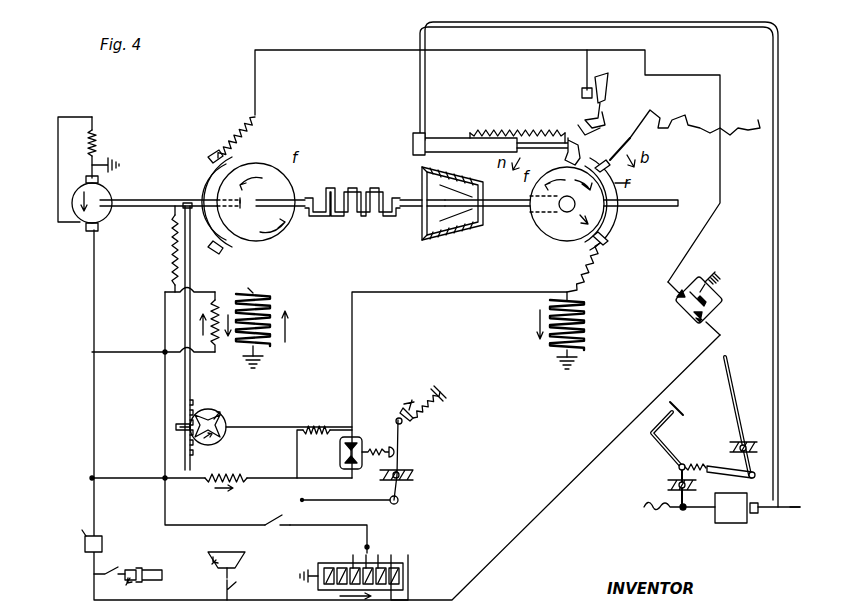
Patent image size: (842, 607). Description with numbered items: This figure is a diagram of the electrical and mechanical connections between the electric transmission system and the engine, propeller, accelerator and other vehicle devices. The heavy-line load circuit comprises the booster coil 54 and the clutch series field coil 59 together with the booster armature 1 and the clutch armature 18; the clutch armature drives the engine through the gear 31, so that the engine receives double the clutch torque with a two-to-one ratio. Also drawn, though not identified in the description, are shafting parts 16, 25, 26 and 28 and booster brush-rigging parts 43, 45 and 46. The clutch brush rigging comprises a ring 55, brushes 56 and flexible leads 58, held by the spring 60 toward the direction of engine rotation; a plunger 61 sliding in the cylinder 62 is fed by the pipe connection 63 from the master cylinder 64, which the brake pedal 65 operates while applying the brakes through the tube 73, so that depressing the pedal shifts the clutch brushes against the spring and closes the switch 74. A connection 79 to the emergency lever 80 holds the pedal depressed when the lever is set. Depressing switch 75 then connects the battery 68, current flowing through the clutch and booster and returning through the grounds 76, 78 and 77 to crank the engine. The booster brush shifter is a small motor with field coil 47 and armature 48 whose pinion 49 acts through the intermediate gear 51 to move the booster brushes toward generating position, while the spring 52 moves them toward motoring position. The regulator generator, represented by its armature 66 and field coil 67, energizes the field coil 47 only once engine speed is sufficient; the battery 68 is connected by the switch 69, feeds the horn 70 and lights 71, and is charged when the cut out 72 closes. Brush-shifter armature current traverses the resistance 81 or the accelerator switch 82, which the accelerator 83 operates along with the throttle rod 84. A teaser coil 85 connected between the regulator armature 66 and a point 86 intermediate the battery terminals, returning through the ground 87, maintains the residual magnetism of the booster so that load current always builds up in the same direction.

The booster armature 1 is at (275, 228).
The crankshaft 16 is at (353, 190).
The clutch armature 18 is at (555, 236).
The shaft 25 is at (420, 220).
The shaft 26 is at (483, 215).
The output shaft 28 is at (660, 200).
The gear 31 is at (442, 236).
The commutator segment 43 is at (207, 178).
The brushes 45 is at (230, 175).
The resistance 46 is at (234, 133).
The field coil 47 is at (207, 484).
The armature 48 is at (222, 440).
The pinion 49 is at (212, 412).
The intermediate gear 51 is at (184, 385).
The spring 52 is at (172, 245).
The coil 54 is at (275, 304).
The ring 55 is at (616, 226).
The brushes 56 is at (594, 242).
The flexible leads 58 is at (603, 268).
The series field coil 59 is at (586, 325).
The spring 60 is at (498, 128).
The piston or plunger 61 is at (540, 138).
The cylinder 62 is at (453, 137).
The pipe connection 63 is at (705, 25).
The master cylinder 64 is at (742, 520).
The pedal 65 is at (660, 448).
The armature 66 is at (106, 214).
The field coil 67 is at (98, 136).
The battery 68 is at (408, 566).
The switch 69 is at (282, 527).
The horn 70 is at (150, 570).
The lights 71 is at (220, 570).
The cut out 72 is at (84, 551).
The tube 73 is at (790, 505).
The switch 74 is at (582, 92).
The switch 75 is at (700, 280).
The ground 76 is at (562, 368).
The ground 77 is at (298, 573).
The ground 78 is at (262, 366).
The connection 79 is at (718, 466).
The emergency lever 80 is at (735, 418).
The resistance 81 is at (314, 424).
The accelerator switch 82 is at (340, 454).
The accelerator 83 is at (440, 404).
The rod 84 is at (342, 502).
The teaser or stabilizing coil 85 is at (215, 352).
The point 86 is at (372, 547).
The ground 87 is at (120, 160).